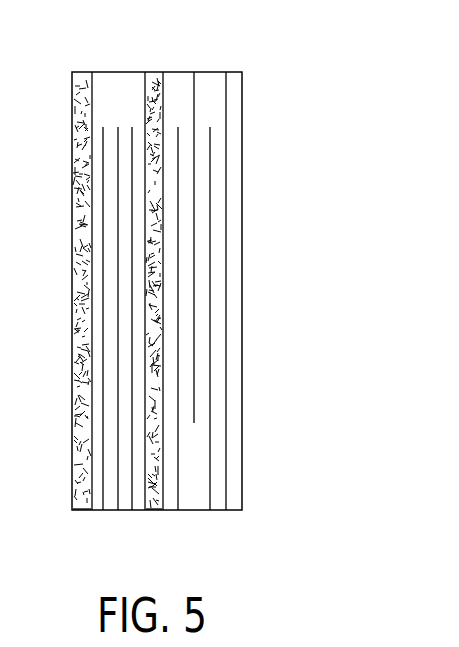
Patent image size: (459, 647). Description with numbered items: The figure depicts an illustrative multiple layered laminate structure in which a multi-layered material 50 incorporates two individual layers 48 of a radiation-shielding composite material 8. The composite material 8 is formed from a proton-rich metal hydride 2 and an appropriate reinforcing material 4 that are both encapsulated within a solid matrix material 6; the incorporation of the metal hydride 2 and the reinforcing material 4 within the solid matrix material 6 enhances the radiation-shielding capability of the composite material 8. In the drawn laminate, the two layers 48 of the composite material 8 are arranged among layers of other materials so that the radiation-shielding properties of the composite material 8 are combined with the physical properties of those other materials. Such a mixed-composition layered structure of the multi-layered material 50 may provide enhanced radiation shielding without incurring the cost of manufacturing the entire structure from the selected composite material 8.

The multi-layered material 50 is at (300, 148).
The composite material 8 is at (82, 72).
The metal hydride 2 is at (82, 135).
The reinforcing material 4 is at (78, 208).
The solid matrix material 6 is at (72, 273).
The layers 48 is at (83, 502).